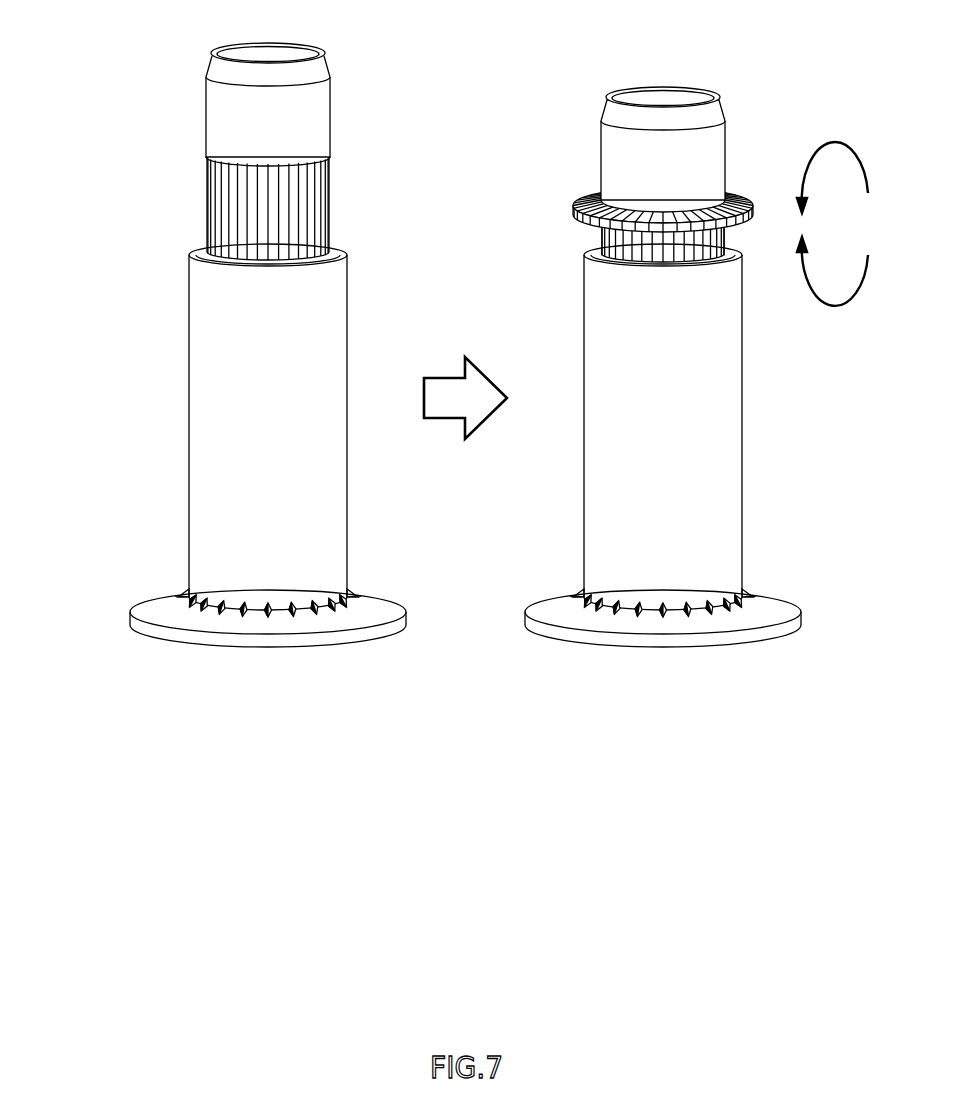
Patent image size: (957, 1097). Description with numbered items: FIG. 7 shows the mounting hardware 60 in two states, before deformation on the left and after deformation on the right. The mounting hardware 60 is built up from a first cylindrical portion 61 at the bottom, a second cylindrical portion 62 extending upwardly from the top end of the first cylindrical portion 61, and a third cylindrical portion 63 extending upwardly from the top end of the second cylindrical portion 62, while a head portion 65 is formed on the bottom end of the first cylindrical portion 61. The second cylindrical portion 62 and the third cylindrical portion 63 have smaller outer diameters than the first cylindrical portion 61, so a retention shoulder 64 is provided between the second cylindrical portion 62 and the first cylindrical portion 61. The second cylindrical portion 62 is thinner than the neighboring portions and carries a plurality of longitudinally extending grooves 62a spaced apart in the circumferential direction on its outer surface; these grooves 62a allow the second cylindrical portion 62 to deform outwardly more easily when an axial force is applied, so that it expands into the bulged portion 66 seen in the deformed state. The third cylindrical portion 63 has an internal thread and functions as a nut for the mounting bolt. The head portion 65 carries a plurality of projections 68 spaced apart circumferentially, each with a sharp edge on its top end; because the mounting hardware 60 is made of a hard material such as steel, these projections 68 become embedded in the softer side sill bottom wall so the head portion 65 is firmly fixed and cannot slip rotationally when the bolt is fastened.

The mounting hardware 60 is at (145, 343).
The first cylindrical portion 61 is at (200, 415).
The second cylindrical portion 62 is at (345, 203).
The grooves 62a is at (210, 201).
The third cylindrical portion 63 is at (210, 116).
The retention shoulder 64 is at (196, 247).
The head portion 65 is at (145, 609).
The bulged portion 66 is at (577, 203).
The projections 68 is at (187, 596).